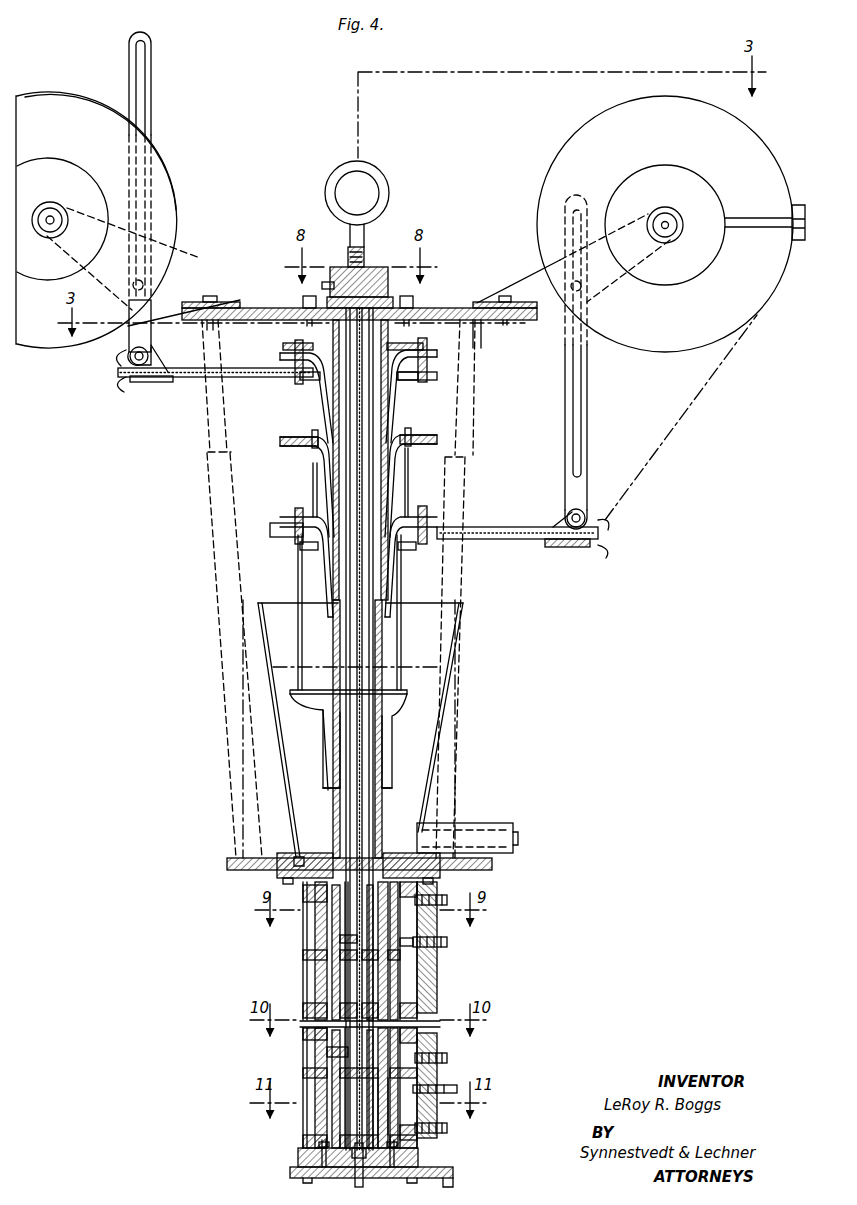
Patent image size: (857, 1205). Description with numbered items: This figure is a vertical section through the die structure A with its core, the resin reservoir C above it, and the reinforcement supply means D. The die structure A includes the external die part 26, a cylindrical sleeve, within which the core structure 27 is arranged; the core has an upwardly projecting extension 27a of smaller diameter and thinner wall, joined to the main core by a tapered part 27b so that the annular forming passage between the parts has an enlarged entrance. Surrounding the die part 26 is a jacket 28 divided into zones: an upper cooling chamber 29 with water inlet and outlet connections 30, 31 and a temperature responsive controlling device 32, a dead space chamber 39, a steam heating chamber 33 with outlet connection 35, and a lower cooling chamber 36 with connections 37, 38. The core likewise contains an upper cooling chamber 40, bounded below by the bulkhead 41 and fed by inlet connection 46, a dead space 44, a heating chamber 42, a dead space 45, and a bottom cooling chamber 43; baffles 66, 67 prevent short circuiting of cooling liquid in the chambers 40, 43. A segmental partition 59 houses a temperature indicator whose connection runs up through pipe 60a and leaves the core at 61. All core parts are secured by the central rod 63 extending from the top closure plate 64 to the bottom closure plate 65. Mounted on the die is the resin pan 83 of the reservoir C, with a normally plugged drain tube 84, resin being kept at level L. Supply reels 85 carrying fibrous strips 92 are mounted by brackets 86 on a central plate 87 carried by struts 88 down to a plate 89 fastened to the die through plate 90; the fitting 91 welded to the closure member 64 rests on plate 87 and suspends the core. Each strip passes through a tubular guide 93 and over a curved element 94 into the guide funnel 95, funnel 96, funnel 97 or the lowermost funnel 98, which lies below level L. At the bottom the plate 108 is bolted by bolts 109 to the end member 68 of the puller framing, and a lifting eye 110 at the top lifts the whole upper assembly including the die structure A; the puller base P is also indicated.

The supply reel 85 is at (84, 68).
The supply means D is at (172, 180).
The bracket 86 is at (238, 300).
The fibrous strip 92 is at (128, 332).
The lifting eye 110 is at (389, 191).
The temperature indicator connection outlet 61 is at (366, 264).
The top closure plate 64 is at (392, 288).
The inlet connection 46 is at (322, 285).
The fitting 91 is at (418, 306).
The central plate 87 is at (484, 326).
The upwardly projecting extension 27a is at (335, 488).
The tapered part 27b is at (335, 838).
The upper cooling chamber 40 is at (372, 652).
The central rod 63 is at (356, 632).
The guide funnel 95 is at (394, 412).
The funnel 96 is at (335, 460).
The funnel 97 is at (322, 578).
The curved element 94 is at (318, 346).
The tubular guide 93 is at (282, 349).
The strut 88 is at (208, 434).
The resin pan 83 is at (446, 698).
The resin reservoir C is at (445, 748).
The resin level L is at (274, 667).
The lowermost funnel 98 is at (323, 735).
The baffle 66 is at (346, 800).
The pipe 60a is at (373, 812).
The drain tube 84 is at (498, 828).
The plate 89 is at (228, 866).
The plate 90 is at (290, 878).
The die structure A is at (300, 958).
The inlet connection 30 is at (445, 896).
The upper cooling chamber 29 is at (408, 922).
The temperature responsive controlling device 32 is at (449, 942).
The outlet connection 31 is at (446, 946).
The dead space chamber 39 is at (408, 990).
The bulkhead 41 is at (343, 936).
The external die part 26 is at (318, 970).
The core structure 27 is at (336, 980).
The dead space 44 is at (343, 994).
The segmental partition 59 is at (395, 1024).
The jacket 28 is at (300, 1046).
The heating chamber 42 is at (335, 1045).
The dead space 45 is at (340, 1062).
The heating chamber 33 is at (410, 1044).
The outlet connection 35 is at (449, 1058).
The outlet connection 38 is at (450, 1087).
The lower cooling chamber 36 is at (408, 1108).
The inlet connection 37 is at (448, 1128).
The baffle 67 is at (345, 1093).
The bottom cooling chamber 43 is at (345, 1113).
The plate 108 is at (300, 1158).
The bolt 109 is at (425, 1155).
The end member 68 is at (454, 1170).
The bottom closure plate 65 is at (366, 1169).
The platform P is at (300, 1176).